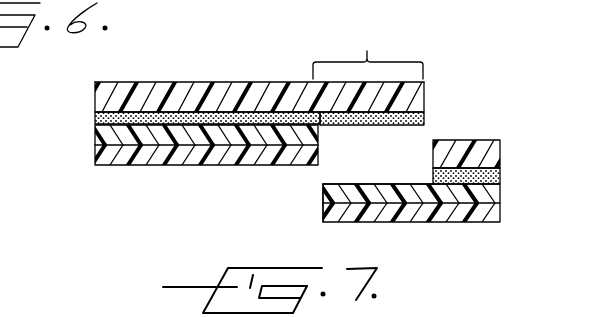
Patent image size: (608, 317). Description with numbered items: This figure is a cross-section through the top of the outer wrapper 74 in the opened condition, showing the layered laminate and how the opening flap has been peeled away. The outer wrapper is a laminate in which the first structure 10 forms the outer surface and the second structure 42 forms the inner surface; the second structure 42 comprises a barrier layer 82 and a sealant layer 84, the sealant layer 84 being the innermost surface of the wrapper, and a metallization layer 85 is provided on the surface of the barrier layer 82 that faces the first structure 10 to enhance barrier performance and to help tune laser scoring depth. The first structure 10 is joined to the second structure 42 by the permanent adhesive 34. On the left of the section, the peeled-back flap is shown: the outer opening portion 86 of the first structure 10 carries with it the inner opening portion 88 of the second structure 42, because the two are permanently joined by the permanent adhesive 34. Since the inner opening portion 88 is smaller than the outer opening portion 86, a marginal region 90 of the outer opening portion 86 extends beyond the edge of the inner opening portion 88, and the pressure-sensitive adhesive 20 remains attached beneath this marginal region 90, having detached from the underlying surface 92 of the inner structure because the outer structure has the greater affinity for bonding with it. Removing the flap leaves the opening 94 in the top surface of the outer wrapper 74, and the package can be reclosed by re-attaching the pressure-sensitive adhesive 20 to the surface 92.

The first structure 10 is at (95, 92).
The pressure-sensitive adhesive 20 is at (405, 127).
The permanent adhesive 34 is at (100, 118).
The second structure 42 is at (85, 127).
The outer wrapper 74 is at (284, 68).
The barrier layer 82 is at (494, 197).
The sealant layer 84 is at (497, 213).
The metallization layer 85 is at (262, 126).
The outer opening portion 86 is at (223, 78).
The inner opening portion 88 is at (133, 158).
The marginal region 90 is at (368, 49).
The surface 92 is at (338, 184).
The opening 94 is at (322, 214).